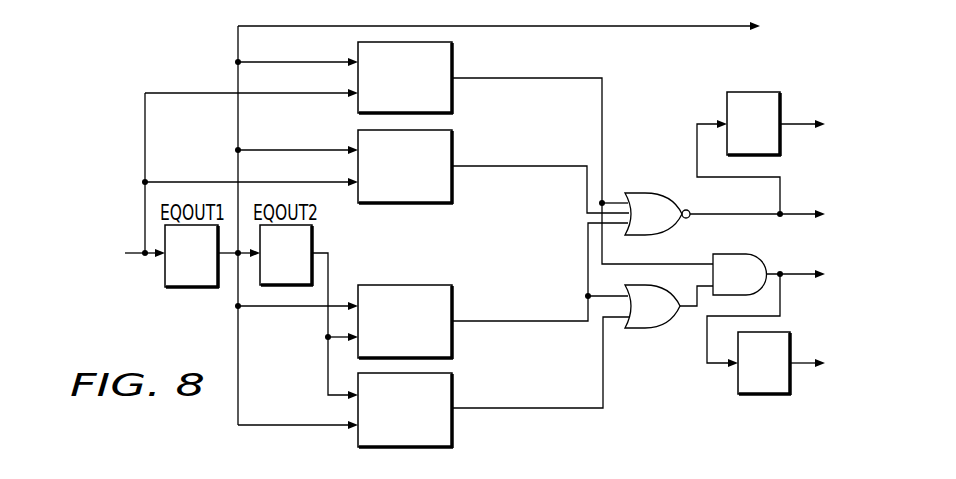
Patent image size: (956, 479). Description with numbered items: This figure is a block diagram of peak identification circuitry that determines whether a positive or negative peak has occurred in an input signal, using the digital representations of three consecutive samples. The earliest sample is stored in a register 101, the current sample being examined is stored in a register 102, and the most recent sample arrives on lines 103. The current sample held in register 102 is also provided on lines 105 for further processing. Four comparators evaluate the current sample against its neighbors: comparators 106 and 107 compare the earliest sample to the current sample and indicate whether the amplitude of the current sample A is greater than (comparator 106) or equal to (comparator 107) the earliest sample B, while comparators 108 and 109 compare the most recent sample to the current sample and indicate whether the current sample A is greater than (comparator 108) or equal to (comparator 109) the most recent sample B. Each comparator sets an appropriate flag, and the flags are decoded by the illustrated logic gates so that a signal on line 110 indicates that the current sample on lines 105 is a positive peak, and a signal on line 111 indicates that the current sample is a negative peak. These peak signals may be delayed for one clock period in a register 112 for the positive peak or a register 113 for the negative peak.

The register 101 is at (312, 238).
The register 102 is at (193, 288).
The lines 103 is at (135, 255).
The lines 105 is at (238, 40).
The comparator 106 is at (455, 338).
The comparator 107 is at (455, 428).
The comparator 108 is at (455, 98).
The comparator 109 is at (455, 185).
The line 110 is at (795, 277).
The line 111 is at (793, 212).
The register 112 is at (765, 395).
The register 113 is at (753, 92).